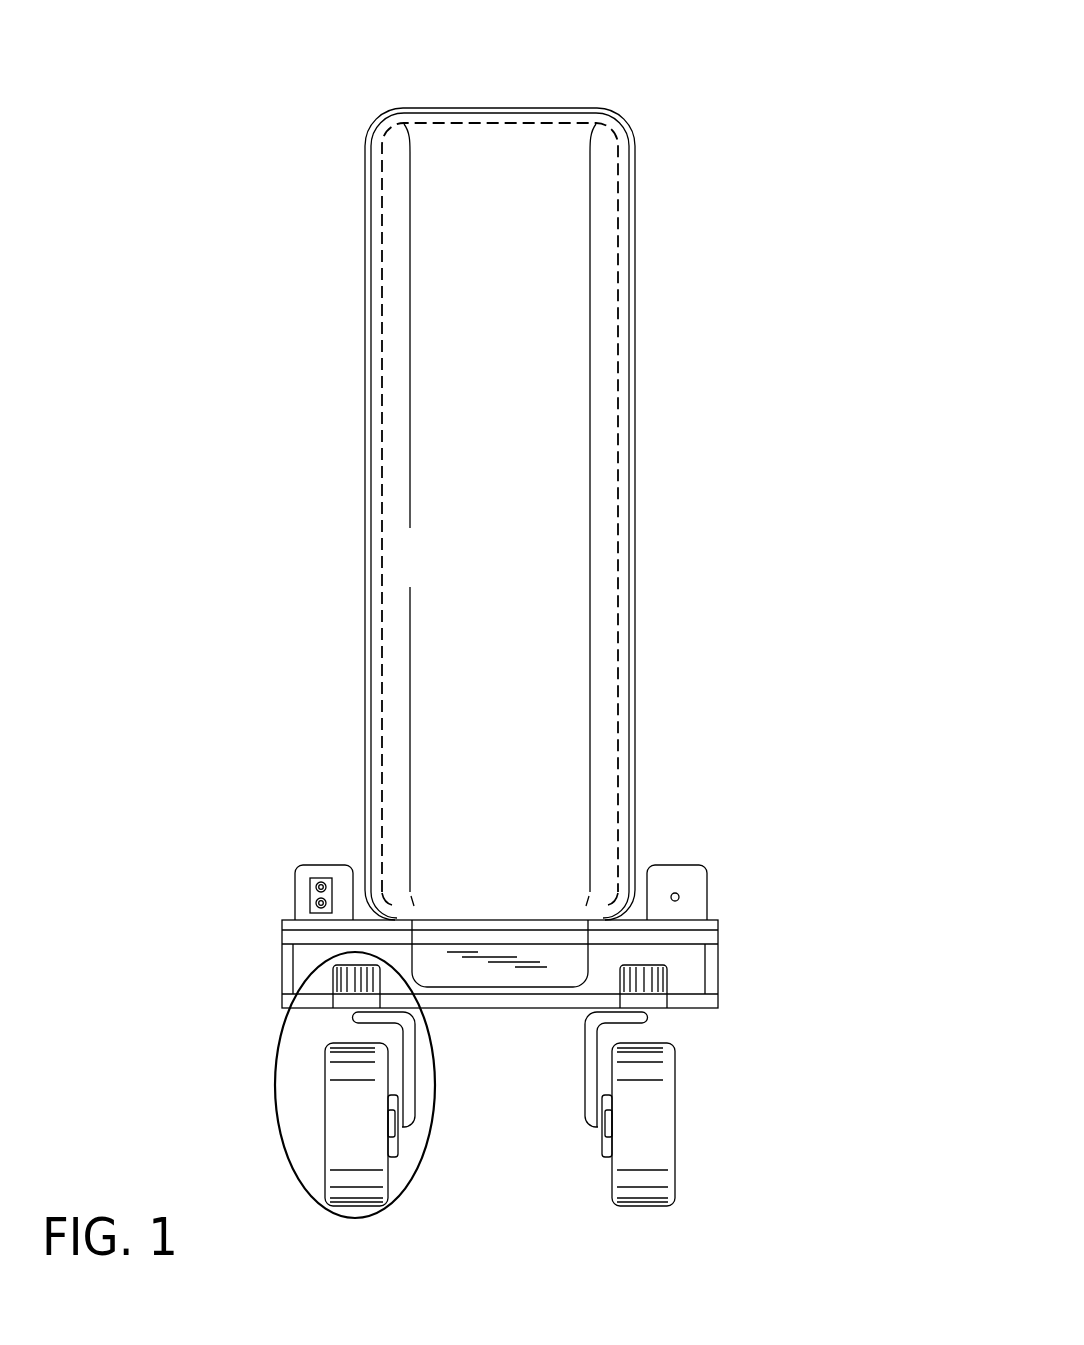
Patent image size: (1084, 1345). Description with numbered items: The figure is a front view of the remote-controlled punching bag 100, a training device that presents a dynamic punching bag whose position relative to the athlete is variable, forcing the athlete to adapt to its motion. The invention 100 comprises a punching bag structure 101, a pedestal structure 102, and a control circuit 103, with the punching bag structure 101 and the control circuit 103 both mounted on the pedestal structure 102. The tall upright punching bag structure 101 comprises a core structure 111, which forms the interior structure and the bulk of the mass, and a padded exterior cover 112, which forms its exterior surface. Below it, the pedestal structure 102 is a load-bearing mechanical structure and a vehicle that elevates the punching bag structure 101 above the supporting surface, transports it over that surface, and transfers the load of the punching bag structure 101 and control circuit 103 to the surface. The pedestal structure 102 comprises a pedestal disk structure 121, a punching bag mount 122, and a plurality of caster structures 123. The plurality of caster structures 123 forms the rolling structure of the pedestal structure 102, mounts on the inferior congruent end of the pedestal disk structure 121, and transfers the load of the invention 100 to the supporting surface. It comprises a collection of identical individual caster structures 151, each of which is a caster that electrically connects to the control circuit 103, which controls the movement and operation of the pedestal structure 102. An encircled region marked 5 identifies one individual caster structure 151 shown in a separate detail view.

The remote-controlled punching bag 100 is at (176, 78).
The punching bag structure 101 is at (772, 55).
The core structure 111 is at (527, 155).
The padded exterior cover 112 is at (627, 162).
The pedestal structure 102 is at (828, 898).
The pedestal disk structure 121 is at (718, 968).
The punching bag mount 122 is at (558, 960).
The plurality of caster structures 123 is at (667, 1213).
The control circuit 103 is at (345, 983).
The detail region (FIG. 5) 5 is at (275, 1088).
The individual caster structure 151 is at (355, 1178).